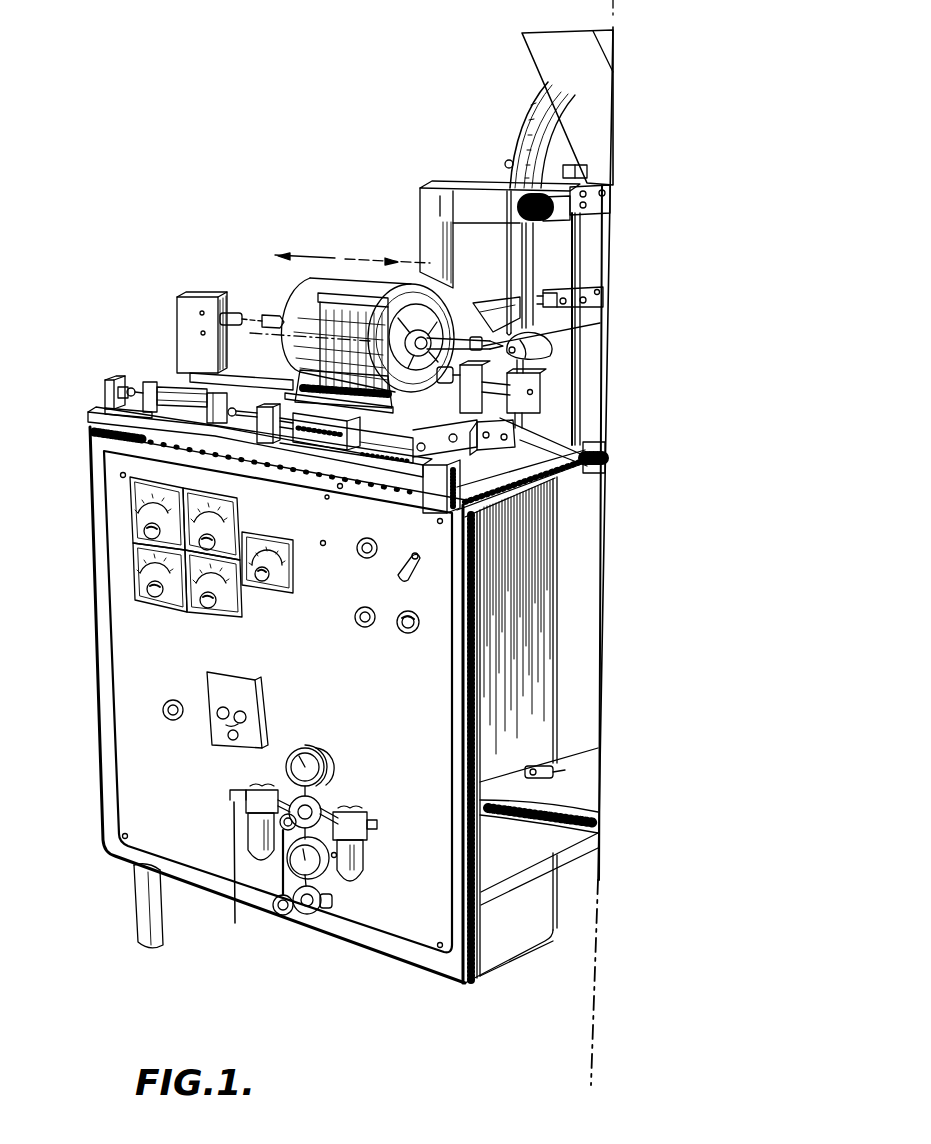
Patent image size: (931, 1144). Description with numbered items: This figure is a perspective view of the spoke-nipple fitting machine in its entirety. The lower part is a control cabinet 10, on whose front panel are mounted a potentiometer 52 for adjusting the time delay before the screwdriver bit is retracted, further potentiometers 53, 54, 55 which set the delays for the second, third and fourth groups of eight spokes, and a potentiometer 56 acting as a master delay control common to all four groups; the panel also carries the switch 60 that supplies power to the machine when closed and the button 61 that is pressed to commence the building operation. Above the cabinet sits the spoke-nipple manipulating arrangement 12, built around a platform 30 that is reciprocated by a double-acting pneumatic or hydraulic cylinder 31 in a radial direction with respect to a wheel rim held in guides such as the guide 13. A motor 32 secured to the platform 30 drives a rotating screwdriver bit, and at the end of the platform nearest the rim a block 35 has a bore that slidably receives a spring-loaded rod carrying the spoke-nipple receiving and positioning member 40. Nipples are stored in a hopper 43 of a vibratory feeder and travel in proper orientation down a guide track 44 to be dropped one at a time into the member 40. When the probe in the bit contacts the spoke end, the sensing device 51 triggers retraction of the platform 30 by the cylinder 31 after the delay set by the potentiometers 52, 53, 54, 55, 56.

The control cabinet 10 is at (116, 757).
The spoke-nipple manipulating arrangement 12 is at (217, 268).
The guide 13 is at (505, 446).
The platform 30 is at (265, 385).
The double-acting pneumatic or hydraulic cylinder 31 is at (165, 398).
The motor 32 is at (355, 288).
The block 35 is at (546, 385).
The spoke-nipple receiving and positioning member 40 is at (530, 338).
The hopper 43 is at (545, 52).
The guide track 44 is at (530, 112).
The sensing device 51 is at (195, 306).
The potentiometer 52 is at (135, 517).
The potentiometer 53 is at (135, 563).
The potentiometer 54 is at (225, 511).
The potentiometer 55 is at (226, 604).
The potentiometer 56 is at (272, 584).
The switch 60 is at (405, 568).
The button 61 is at (408, 639).